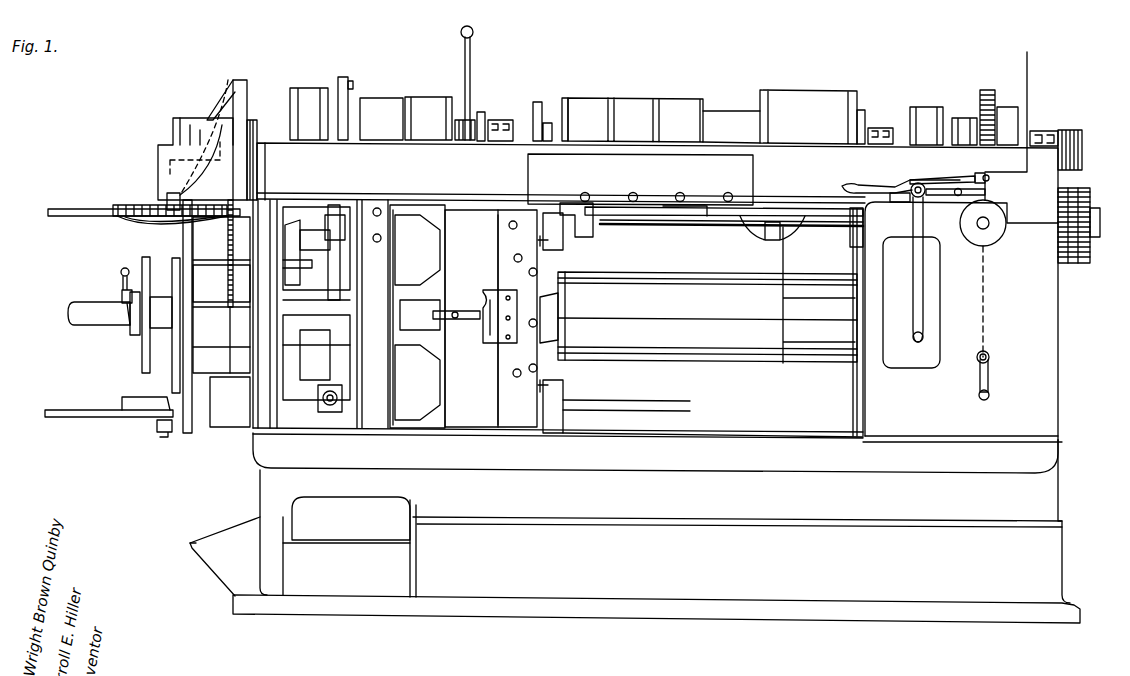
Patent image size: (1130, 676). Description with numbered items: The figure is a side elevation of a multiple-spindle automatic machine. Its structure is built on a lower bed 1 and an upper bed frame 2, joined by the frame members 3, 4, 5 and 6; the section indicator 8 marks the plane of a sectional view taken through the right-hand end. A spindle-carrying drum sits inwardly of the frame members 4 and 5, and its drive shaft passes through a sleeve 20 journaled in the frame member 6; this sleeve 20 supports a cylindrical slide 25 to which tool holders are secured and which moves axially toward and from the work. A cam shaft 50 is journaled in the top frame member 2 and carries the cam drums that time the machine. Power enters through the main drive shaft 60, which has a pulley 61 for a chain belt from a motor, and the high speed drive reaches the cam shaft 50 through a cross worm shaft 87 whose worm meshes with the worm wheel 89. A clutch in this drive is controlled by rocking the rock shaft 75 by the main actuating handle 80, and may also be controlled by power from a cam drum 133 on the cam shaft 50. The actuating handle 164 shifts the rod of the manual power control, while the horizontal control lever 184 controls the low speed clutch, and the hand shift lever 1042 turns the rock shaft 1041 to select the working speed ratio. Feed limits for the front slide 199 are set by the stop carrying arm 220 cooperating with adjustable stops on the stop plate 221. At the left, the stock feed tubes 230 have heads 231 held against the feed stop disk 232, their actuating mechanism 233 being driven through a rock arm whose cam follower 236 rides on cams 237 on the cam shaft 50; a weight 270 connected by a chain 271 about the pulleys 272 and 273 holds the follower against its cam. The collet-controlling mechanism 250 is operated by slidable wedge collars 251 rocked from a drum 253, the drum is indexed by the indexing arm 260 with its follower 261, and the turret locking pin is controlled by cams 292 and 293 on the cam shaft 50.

The lower bed 1 is at (635, 528).
The upper bed frame 2 is at (655, 291).
The frame member 3 is at (265, 314).
The frame member 4 is at (401, 314).
The frame member 5 is at (654, 320).
The frame member 6 is at (962, 322).
The section line 8 is at (1016, 56).
The sleeve 20 is at (820, 322).
The cylindrical slide 25 is at (698, 317).
The cam shaft 50 is at (756, 120).
The main drive shaft 60 is at (1098, 242).
The pulley 61 is at (1078, 186).
The rock shaft 75 is at (918, 183).
The main actuating handle 80 is at (913, 312).
The cross worm shaft 87 is at (980, 235).
The worm wheel 89 is at (982, 95).
The cam drum 133 is at (920, 112).
The actuating handle 164 is at (990, 178).
The control lever 184 is at (955, 173).
The front slide 199 is at (505, 368).
The stop carrying arm 220 is at (468, 311).
The stop plate 221 is at (495, 290).
The stock feed tubes 230 is at (200, 263).
The heads 231 is at (170, 357).
The feed stop disk 232 is at (168, 425).
The actuating mechanism 233 is at (115, 209).
The cam follower 236 is at (163, 200).
The cams 237 is at (235, 80).
The collet-controlling mechanism 250 is at (340, 210).
The wedge collars 251 is at (300, 225).
The drum 253 is at (305, 90).
The indexing arm 260 is at (350, 78).
The follower 261 is at (355, 84).
The weight 270 is at (233, 408).
The chain 271 is at (221, 283).
The pulley 272 is at (221, 286).
The pulley 273 is at (150, 226).
The cam 292 is at (486, 112).
The cam 293 is at (472, 108).
The rock shaft 1041 is at (988, 354).
The hand shift lever 1042 is at (992, 400).